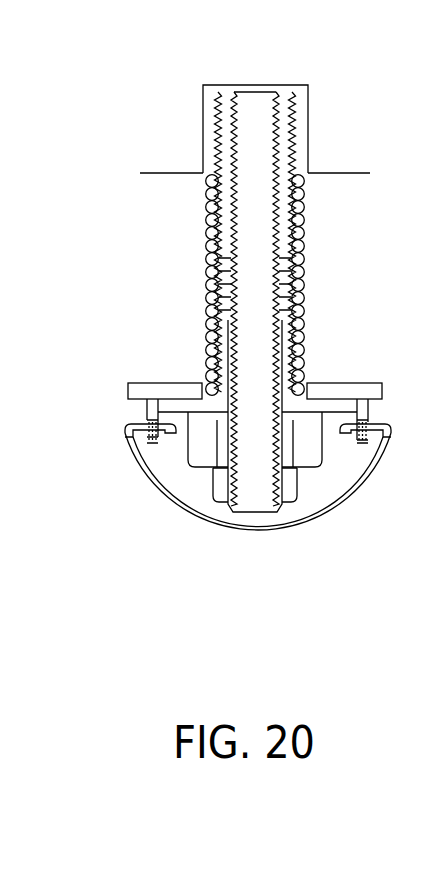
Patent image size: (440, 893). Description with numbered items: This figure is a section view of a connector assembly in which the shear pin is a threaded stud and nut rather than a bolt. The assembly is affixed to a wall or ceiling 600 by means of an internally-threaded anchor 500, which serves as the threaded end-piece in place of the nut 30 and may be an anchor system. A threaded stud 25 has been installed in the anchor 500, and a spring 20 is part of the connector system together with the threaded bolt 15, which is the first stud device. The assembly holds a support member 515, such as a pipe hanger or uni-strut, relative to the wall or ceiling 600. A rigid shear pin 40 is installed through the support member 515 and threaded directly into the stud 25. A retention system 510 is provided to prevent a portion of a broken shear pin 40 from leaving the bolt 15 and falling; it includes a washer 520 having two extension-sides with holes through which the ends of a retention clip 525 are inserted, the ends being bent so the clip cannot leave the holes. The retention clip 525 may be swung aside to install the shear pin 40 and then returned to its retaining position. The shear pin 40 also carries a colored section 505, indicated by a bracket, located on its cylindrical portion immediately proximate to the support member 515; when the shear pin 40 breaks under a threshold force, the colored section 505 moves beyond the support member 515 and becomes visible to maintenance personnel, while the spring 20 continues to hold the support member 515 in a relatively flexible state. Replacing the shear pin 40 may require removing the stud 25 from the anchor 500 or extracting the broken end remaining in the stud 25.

The anchor 500 is at (172, 104).
The wall or ceiling 600 is at (239, 210).
The threaded stud 25 is at (298, 242).
The spring 20 is at (297, 302).
The support member 515 is at (220, 354).
The washer 520 is at (147, 412).
The colored section 505 is at (143, 444).
The threaded bolt 15 is at (346, 466).
The nut 30 is at (205, 507).
The retention system 510 is at (258, 505).
The shear pin 40 is at (258, 504).
The retention clip 525 is at (263, 532).